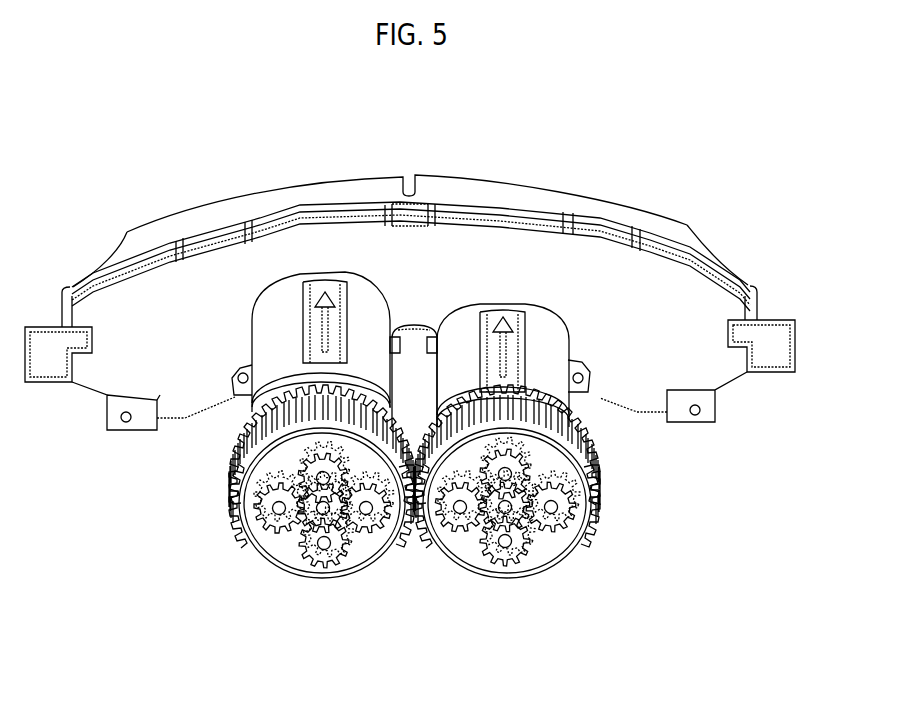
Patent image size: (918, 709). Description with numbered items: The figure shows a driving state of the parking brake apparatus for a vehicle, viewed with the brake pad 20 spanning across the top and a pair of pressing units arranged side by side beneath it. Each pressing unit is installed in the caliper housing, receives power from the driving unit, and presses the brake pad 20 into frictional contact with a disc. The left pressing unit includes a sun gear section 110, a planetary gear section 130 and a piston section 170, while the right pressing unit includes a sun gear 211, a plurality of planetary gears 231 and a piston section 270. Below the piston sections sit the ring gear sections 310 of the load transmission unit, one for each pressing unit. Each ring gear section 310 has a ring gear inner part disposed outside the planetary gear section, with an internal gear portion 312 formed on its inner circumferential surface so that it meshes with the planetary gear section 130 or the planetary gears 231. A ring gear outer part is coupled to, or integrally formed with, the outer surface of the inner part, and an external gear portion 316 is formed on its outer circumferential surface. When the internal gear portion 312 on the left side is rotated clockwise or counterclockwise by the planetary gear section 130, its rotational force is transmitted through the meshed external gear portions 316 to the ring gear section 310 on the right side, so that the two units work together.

The brake pad 20 is at (578, 262).
The piston section 170 is at (270, 357).
The piston section 270 is at (553, 357).
The sun gear section 110 is at (311, 517).
The planetary gear section 130 is at (255, 517).
The sun gear 211 is at (525, 532).
The planetary gears 231 is at (562, 510).
The ring gear section 310 is at (216, 477).
The internal gear portion 312 is at (570, 548).
The external gear portion 316 is at (580, 445).